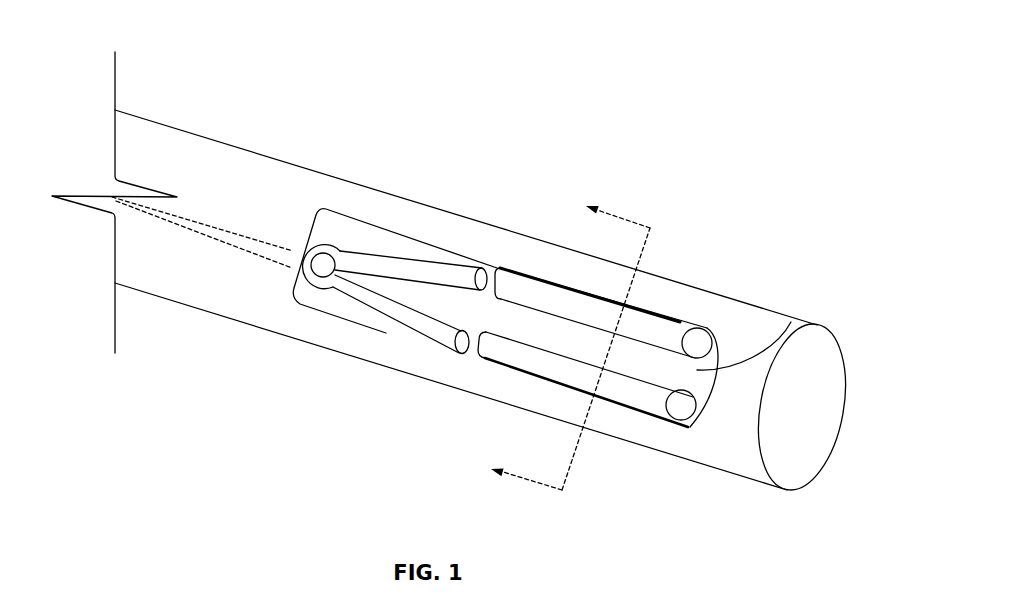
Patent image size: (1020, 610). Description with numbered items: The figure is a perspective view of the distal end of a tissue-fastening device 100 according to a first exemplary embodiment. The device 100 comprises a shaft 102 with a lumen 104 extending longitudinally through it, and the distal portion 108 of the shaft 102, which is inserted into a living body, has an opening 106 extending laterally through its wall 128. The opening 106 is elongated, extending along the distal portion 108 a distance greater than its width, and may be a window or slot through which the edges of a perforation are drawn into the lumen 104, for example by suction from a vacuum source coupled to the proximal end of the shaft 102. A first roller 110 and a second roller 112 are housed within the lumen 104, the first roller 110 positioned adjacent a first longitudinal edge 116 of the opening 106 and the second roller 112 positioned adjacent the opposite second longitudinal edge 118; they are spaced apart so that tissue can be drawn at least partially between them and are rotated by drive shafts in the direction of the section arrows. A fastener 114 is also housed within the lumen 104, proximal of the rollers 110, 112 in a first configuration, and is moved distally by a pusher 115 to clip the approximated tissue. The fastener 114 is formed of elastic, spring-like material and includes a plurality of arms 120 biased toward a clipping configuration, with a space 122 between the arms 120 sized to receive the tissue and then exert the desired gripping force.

The device 100 is at (462, 277).
The shaft 102 is at (234, 146).
The lumen 104 is at (807, 403).
The opening 106 is at (791, 322).
The distal portion 108 is at (505, 228).
The first roller 110 is at (532, 360).
The second roller 112 is at (640, 318).
The fastener 114 is at (350, 300).
The pusher 115 is at (223, 242).
The first longitudinal edge 116 is at (627, 408).
The second longitudinal edge 118 is at (678, 320).
The arms 120 is at (445, 277).
The space 122 is at (423, 290).
The wall 128 is at (720, 438).